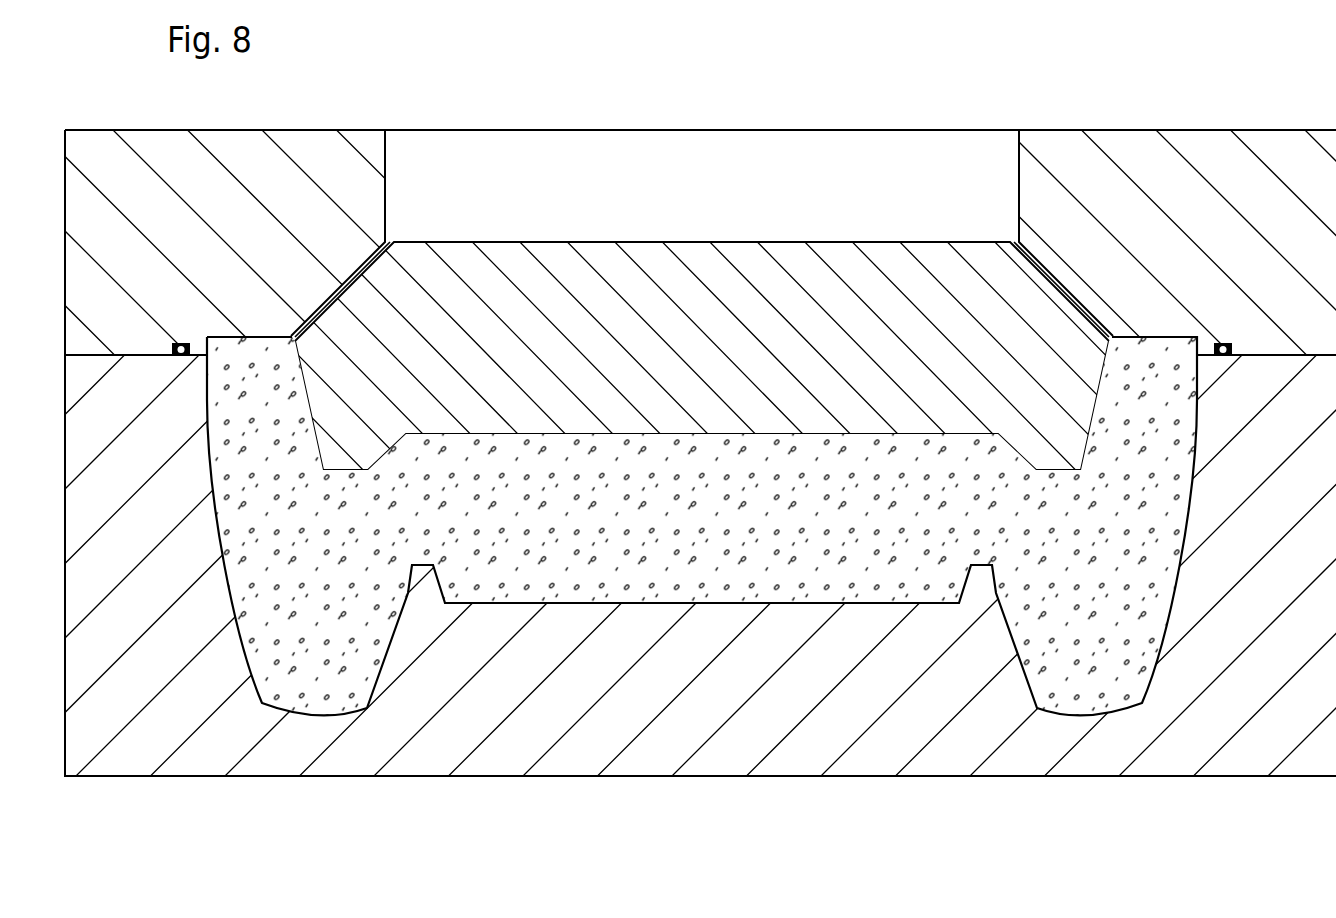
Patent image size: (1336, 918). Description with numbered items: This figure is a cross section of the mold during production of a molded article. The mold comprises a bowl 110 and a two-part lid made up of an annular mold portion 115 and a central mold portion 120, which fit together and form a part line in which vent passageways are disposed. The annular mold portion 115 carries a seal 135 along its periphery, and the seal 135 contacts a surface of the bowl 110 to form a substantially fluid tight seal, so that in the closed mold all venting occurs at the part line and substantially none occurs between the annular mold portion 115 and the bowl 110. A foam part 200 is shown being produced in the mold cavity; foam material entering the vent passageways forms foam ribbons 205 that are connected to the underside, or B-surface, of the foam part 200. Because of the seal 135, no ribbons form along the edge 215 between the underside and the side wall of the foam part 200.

The bowl 110 is at (655, 753).
The annular mold portion 115 is at (354, 157).
The central mold portion 120 is at (698, 262).
The seal 135 is at (181, 343).
The foam part 200 is at (1090, 658).
The foam ribbons 205 is at (1060, 278).
The edge 215 is at (1195, 337).